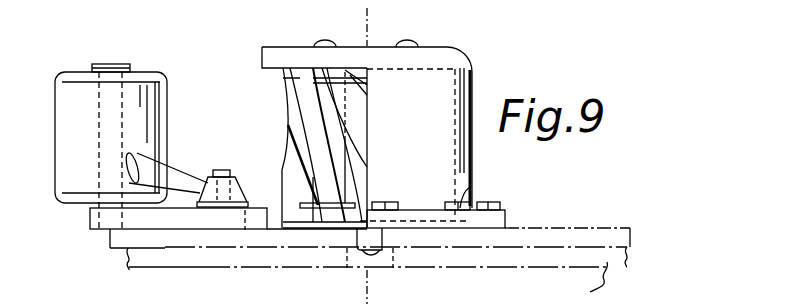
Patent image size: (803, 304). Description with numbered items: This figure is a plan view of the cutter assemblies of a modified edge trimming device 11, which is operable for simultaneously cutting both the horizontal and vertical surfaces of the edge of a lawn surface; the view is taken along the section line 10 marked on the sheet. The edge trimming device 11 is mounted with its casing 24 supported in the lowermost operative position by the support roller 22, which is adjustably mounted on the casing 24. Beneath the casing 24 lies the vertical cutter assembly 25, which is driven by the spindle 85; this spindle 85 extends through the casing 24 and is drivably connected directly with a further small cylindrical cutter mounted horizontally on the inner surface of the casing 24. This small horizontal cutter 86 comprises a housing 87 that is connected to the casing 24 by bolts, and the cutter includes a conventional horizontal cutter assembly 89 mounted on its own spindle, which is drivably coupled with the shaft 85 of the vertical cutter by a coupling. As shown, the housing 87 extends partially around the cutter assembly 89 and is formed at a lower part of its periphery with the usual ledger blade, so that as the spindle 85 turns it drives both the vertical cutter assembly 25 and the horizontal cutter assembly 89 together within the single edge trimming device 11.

The section line 10- 10 is at (362, 21).
The edge trimming device 11 is at (516, 196).
The support roller 22 is at (66, 95).
The casing 24 is at (608, 233).
The vertical cutter assembly 25 is at (590, 267).
The spindle 85 is at (380, 257).
The small horizontal cutter 86 is at (467, 190).
The housing 87 is at (443, 97).
The horizontal cutter assembly 89 is at (300, 101).